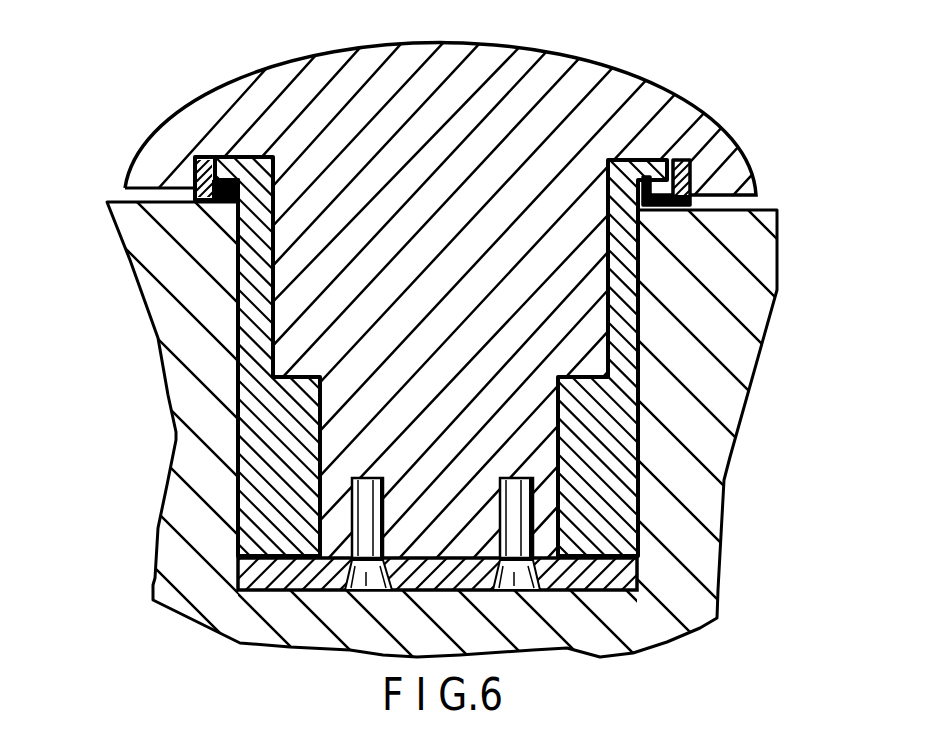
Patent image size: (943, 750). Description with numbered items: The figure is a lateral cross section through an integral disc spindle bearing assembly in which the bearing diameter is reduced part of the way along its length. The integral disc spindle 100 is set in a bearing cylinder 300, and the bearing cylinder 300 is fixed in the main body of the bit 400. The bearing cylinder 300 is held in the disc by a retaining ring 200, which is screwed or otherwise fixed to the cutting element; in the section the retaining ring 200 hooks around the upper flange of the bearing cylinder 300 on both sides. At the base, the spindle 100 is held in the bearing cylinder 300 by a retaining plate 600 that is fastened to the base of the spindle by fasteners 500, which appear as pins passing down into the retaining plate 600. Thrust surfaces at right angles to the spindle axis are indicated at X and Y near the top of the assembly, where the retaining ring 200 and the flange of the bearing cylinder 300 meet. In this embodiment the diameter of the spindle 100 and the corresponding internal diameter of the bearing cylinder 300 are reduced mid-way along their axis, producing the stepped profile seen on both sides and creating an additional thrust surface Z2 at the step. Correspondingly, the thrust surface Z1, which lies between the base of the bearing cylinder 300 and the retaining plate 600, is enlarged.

The integral disc spindle 100 is at (556, 100).
The retaining ring 200 is at (688, 176).
The bearing cylinder 300 is at (623, 362).
The main body of the bit 400 is at (471, 432).
The fasteners 500 is at (513, 540).
The retaining plate 600 is at (291, 572).
The thrust surface X is at (190, 199).
The thrust surface Y is at (648, 158).
The thrust surface Z1 is at (237, 549).
The additional thrust surface Z2 is at (256, 378).